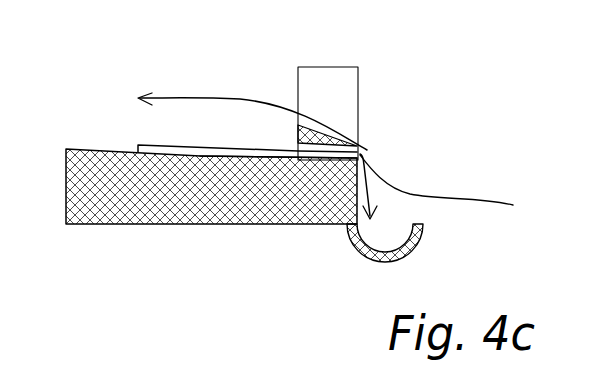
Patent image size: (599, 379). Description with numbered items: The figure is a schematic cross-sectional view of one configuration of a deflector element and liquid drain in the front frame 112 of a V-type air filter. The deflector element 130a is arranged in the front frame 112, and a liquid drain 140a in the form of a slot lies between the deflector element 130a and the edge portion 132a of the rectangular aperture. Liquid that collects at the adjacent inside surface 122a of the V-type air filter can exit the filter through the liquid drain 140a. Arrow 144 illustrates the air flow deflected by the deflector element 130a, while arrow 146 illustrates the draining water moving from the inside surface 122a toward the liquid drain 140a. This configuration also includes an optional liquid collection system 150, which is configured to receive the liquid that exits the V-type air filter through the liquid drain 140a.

The front frame 112 is at (359, 85).
The adjacent inside surface 122a is at (97, 149).
The deflector element 130a is at (317, 133).
The edge portion 132a is at (333, 163).
The liquid drain 140a is at (367, 150).
The arrow illustrating deflected air flow 144 is at (478, 197).
The arrow illustrating draining water 146 is at (153, 146).
The liquid collection system 150 is at (381, 261).